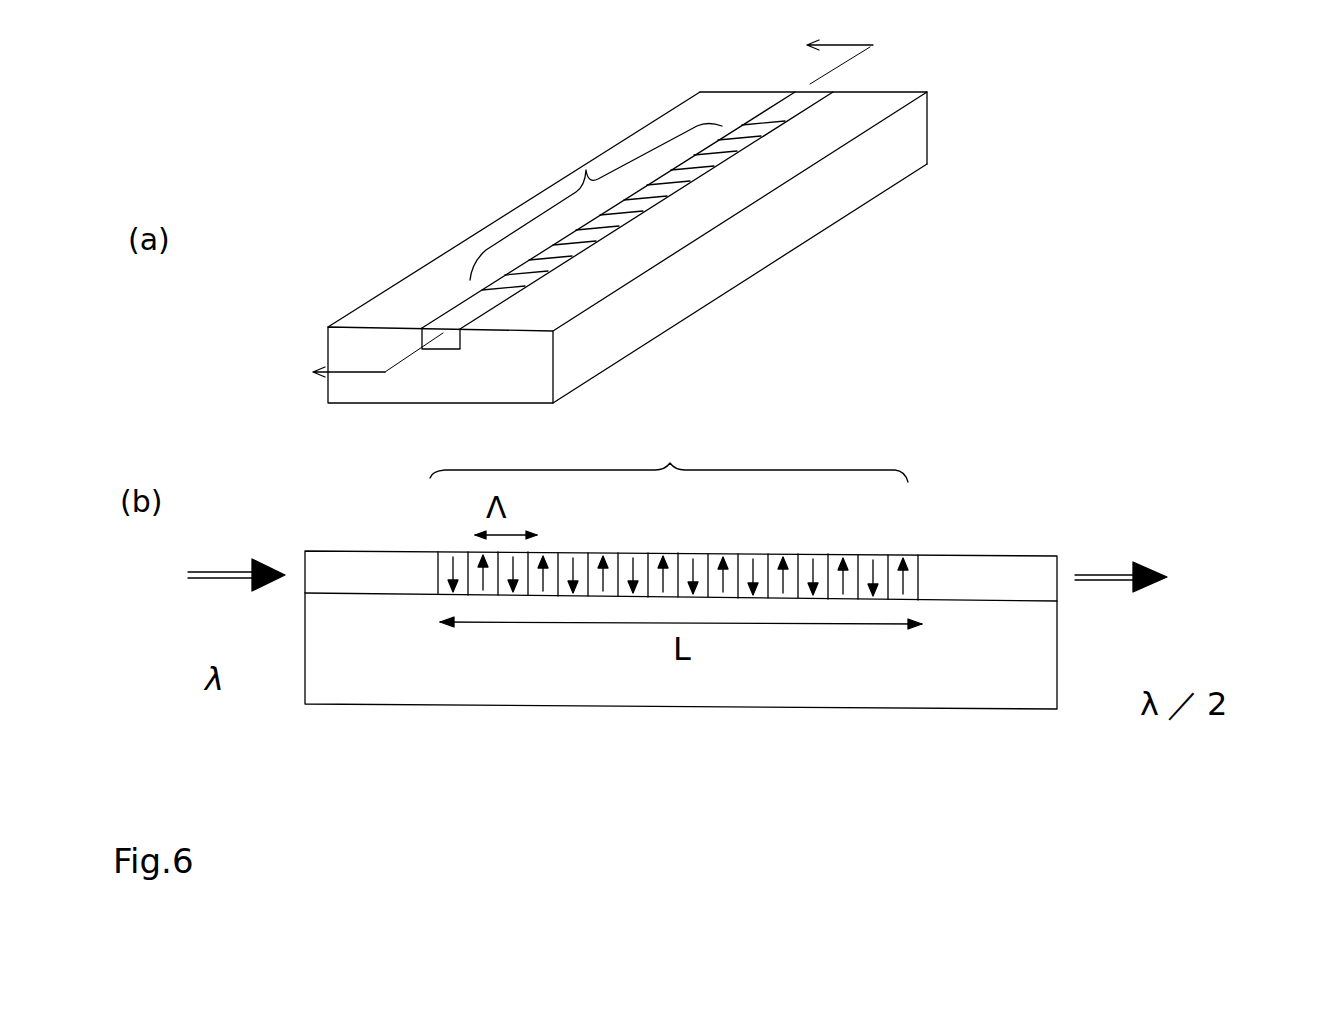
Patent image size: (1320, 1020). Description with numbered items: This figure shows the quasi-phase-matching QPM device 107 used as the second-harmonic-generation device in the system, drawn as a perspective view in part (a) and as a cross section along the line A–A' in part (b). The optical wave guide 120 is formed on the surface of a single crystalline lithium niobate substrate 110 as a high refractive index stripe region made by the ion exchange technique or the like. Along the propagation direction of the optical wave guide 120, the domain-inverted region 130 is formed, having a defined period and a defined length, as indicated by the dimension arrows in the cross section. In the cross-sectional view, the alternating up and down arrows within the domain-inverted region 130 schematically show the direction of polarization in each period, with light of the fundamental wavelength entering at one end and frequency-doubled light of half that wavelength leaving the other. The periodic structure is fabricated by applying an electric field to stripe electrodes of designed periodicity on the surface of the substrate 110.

The QPM device 107 is at (425, 165).
The substrate 110 is at (727, 268).
The optical wave guide 120 is at (447, 322).
The domain-inverted region 130 is at (586, 168).